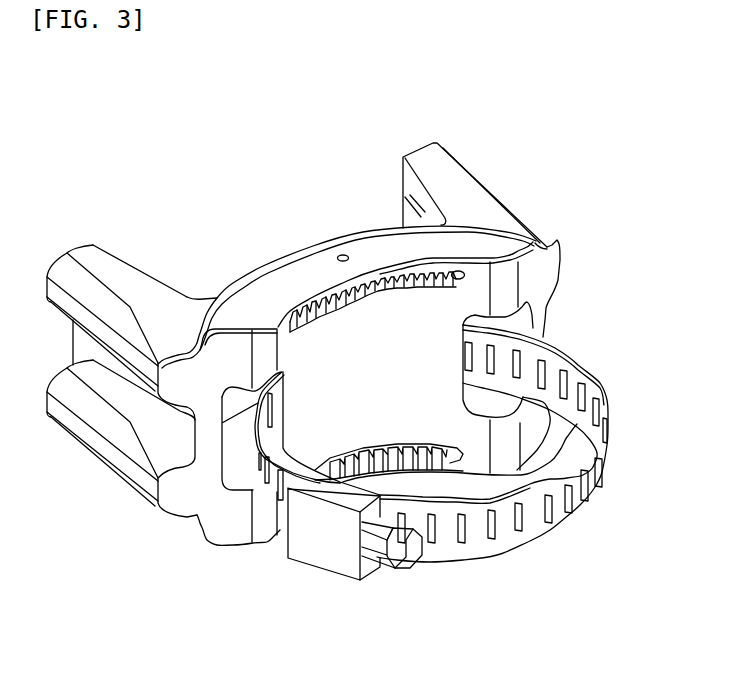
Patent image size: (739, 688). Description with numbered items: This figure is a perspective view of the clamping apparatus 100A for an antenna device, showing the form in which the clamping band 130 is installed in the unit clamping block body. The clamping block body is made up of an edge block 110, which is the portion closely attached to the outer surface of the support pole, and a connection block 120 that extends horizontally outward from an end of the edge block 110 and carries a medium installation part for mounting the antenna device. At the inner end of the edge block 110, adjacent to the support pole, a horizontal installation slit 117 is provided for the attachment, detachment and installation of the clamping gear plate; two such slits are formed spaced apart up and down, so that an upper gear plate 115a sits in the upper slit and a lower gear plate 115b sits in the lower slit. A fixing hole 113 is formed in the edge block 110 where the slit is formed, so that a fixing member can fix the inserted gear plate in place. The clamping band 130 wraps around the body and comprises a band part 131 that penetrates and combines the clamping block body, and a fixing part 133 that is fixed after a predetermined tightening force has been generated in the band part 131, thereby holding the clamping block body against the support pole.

The clamping apparatus 100A is at (101, 113).
The edge block 110 is at (287, 273).
The fixing hole 113 is at (340, 254).
The upper gear plate 115a is at (377, 275).
The lower gear plate 115b is at (430, 457).
The horizontal installation slit 117 is at (455, 276).
The connection block 120 is at (103, 262).
The clamping band 130 is at (455, 563).
The band part 131 is at (575, 357).
The fixing part 133 is at (332, 556).